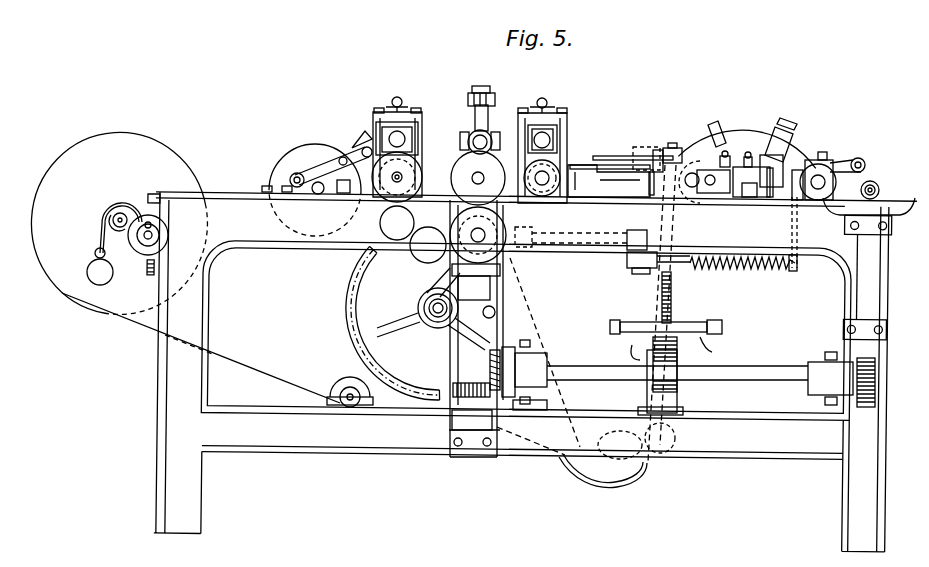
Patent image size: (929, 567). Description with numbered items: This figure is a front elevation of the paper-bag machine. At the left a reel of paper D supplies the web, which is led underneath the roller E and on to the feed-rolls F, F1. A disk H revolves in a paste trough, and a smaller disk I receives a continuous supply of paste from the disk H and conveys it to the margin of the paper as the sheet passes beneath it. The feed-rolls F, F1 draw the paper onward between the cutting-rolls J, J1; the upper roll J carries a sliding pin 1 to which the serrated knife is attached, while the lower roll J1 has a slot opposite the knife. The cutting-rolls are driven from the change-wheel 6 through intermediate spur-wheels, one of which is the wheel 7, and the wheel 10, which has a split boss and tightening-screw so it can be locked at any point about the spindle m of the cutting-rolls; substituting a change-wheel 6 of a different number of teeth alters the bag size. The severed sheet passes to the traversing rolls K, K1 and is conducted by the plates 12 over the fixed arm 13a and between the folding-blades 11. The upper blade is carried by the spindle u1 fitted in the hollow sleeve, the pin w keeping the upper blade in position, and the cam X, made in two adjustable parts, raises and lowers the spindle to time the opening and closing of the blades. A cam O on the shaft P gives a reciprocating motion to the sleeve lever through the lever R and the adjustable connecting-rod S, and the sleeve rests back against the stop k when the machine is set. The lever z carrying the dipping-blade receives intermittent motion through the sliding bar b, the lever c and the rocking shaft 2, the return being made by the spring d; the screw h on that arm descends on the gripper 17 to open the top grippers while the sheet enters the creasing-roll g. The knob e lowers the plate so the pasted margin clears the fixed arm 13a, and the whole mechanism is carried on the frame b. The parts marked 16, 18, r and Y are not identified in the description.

The sliding bar b is at (530, 362).
The reel of paper D is at (119, 223).
The roller E is at (352, 407).
The cam O is at (495, 272).
The shaft P is at (512, 260).
The lever R is at (486, 242).
The feed-roll F is at (380, 128).
The feed-roll F1 is at (403, 170).
The upper cutting-roll J is at (490, 128).
The spindle of the cutting-rolls m is at (483, 89).
The rocking shaft 2 is at (490, 103).
The sliding pin 1 is at (510, 100).
The intermediate spur-wheel 7 is at (652, 163).
The lower cutting-roll J1 is at (492, 162).
The spur-wheel 10 is at (479, 178).
The traversing roll K is at (562, 126).
The traversing roll K1 is at (572, 168).
The plate 12 is at (586, 160).
The folding-blade 11 is at (621, 164).
The fixed arm 13a is at (640, 147).
The pin w is at (645, 139).
The knob e is at (658, 153).
The spindle u1 is at (672, 143).
The lever z is at (696, 145).
The creasing-roll g is at (704, 186).
The screw 18 is at (725, 155).
The gripper 17 is at (750, 155).
The plunger 16 is at (778, 130).
The screw h is at (791, 128).
The lever c is at (823, 176).
The spring d is at (866, 170).
The adjustable connecting-rod S is at (581, 238).
The stop k is at (651, 194).
The spring r is at (745, 271).
The worm gear Y is at (700, 338).
The cam X is at (680, 392).
The disk H is at (317, 183).
The smaller disk I is at (355, 143).
The change-wheel 6 is at (268, 202).